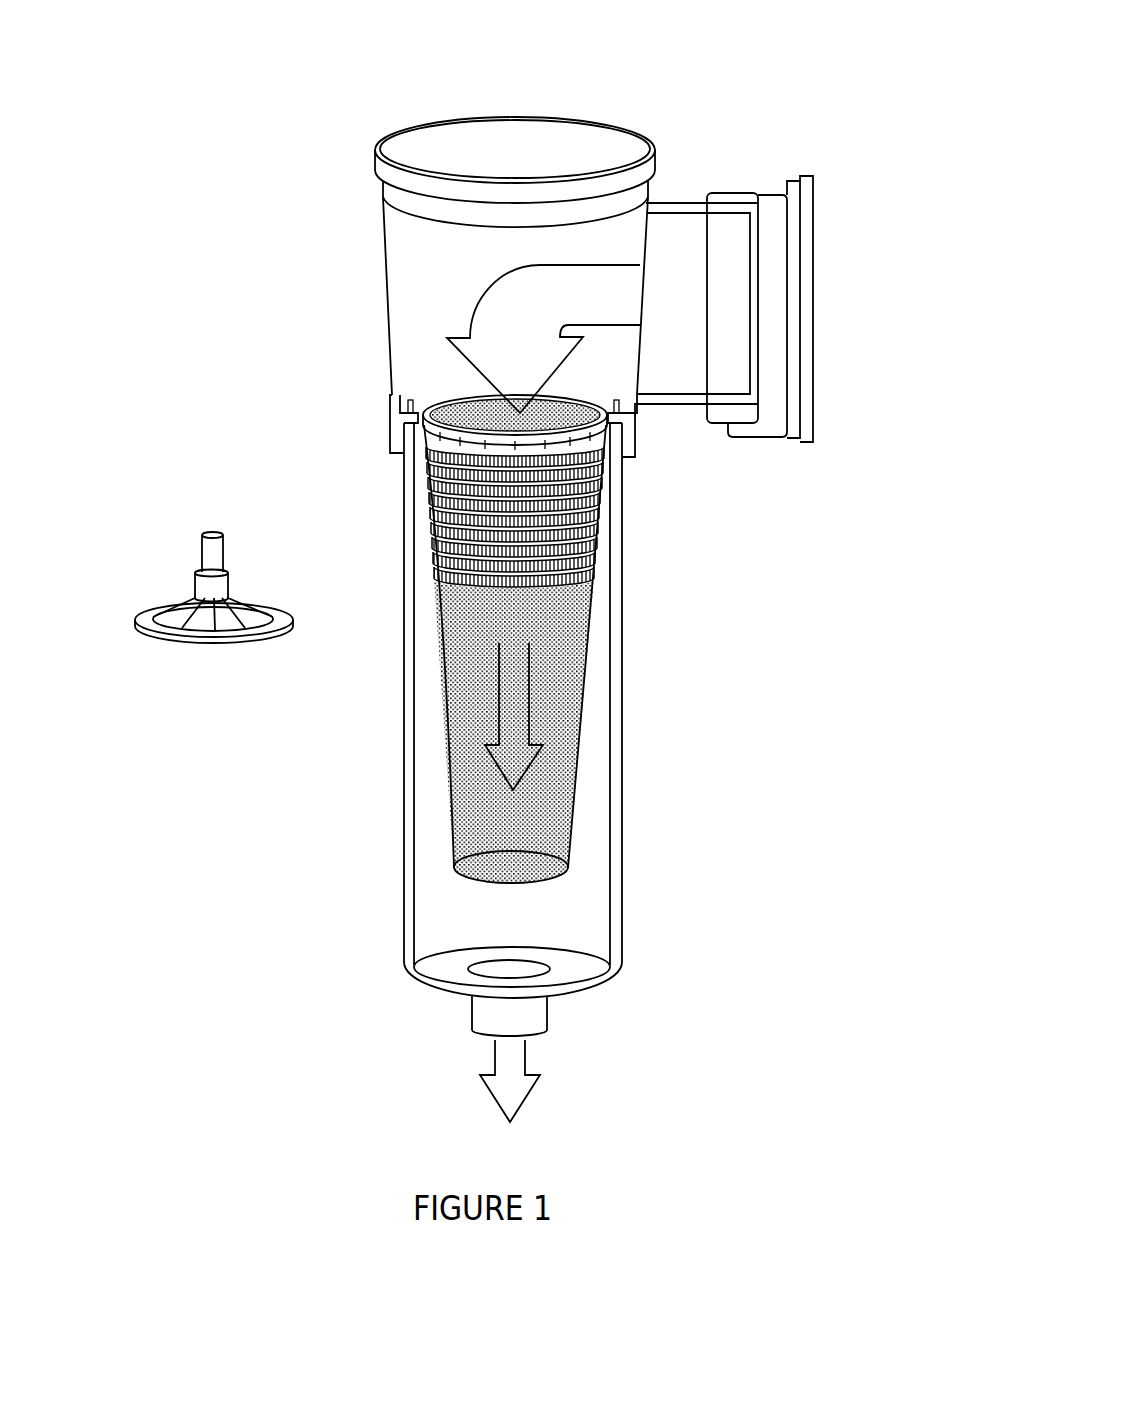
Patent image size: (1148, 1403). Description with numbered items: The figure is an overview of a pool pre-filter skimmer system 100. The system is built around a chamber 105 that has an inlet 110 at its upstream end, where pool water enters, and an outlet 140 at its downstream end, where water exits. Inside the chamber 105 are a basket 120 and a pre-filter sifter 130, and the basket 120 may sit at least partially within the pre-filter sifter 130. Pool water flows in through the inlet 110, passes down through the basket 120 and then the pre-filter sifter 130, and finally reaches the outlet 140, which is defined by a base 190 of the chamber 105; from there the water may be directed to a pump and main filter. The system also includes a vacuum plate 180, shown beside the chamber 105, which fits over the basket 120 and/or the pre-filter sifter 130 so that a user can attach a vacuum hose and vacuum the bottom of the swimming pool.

The pre-filter skimmer system 100 is at (390, 87).
The chamber 105 is at (622, 563).
The inlet 110 is at (813, 296).
The basket 120 is at (433, 468).
The pre-filter sifter 130 is at (590, 603).
The outlet 140 is at (530, 970).
The vacuum plate 180 is at (202, 555).
The base 190 is at (575, 975).